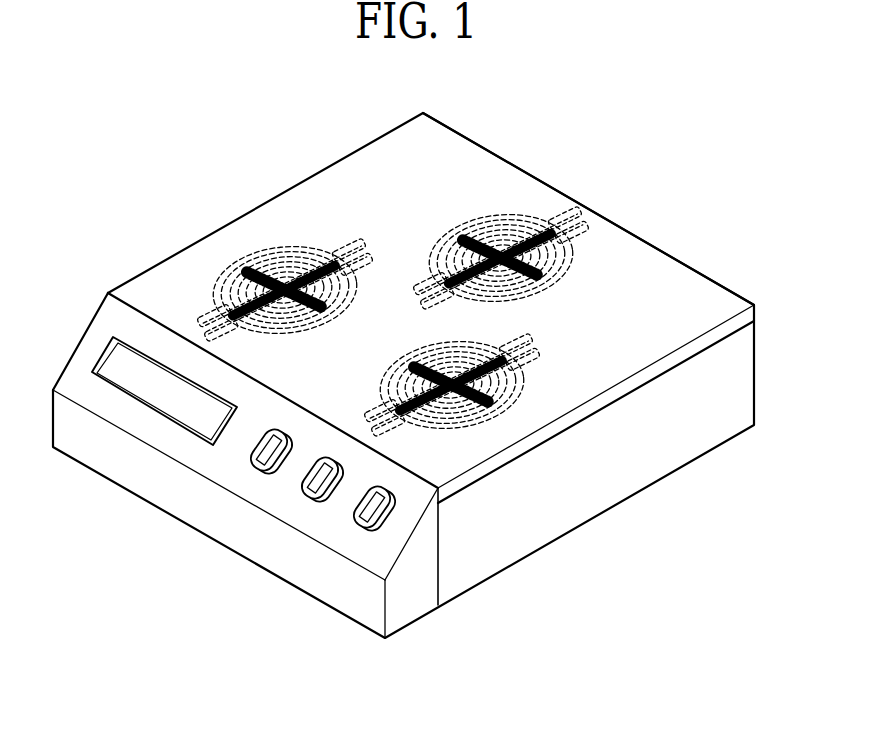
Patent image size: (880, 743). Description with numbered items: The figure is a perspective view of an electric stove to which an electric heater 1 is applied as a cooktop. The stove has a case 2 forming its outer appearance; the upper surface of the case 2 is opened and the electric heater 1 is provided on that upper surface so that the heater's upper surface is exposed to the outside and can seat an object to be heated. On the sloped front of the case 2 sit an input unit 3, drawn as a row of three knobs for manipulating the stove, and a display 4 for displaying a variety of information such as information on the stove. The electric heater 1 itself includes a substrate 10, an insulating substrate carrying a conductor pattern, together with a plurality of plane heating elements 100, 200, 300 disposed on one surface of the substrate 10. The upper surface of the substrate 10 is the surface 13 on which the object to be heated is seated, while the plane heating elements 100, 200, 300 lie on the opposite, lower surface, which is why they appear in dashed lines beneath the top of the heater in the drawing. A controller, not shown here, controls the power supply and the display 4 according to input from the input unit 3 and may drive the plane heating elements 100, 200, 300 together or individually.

The electric heater 1 is at (437, 356).
The case 2 is at (742, 382).
The input unit 3 is at (255, 470).
The display 4 is at (173, 398).
The substrate 10 is at (544, 182).
The surface on which an object to be heated is seated 13 is at (493, 178).
The plane heating element 100 is at (588, 215).
The plane heating element 200 is at (285, 290).
The plane heating element 300 is at (452, 385).